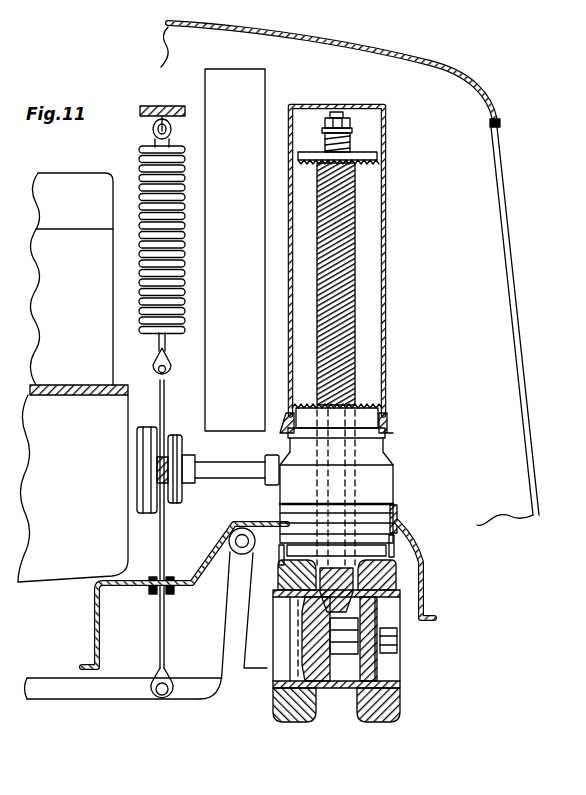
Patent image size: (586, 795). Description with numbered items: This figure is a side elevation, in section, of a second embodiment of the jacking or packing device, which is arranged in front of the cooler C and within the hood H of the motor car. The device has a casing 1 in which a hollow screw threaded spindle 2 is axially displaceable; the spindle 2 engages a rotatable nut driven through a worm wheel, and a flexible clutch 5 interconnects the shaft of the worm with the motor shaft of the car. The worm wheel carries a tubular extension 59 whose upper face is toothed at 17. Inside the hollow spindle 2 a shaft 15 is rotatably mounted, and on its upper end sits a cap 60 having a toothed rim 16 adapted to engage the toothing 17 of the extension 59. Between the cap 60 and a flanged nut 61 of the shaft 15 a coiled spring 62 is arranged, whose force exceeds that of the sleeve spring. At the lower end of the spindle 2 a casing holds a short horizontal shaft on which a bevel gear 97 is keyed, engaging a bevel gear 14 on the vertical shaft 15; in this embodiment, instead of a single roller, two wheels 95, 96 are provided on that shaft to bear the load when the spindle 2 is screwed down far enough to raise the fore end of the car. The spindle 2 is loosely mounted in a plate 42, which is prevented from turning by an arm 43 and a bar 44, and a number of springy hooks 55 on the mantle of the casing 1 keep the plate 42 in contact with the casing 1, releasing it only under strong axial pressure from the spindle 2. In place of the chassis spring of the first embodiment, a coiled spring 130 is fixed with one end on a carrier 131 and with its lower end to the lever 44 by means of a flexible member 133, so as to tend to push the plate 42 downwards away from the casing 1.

The hood H is at (479, 80).
The cooler C is at (214, 78).
The carrier 131 is at (164, 100).
The coiled spring 130 is at (140, 153).
The flexible member 133 is at (160, 622).
The flexible clutch 5 is at (196, 449).
The arm 43 is at (230, 553).
The bar 44 is at (75, 692).
The hollow screw threaded spindle 2 is at (357, 254).
The flanged nut 61 is at (326, 135).
The coiled spring 62 is at (352, 145).
The cap 60 is at (360, 150).
The toothed rim 16 is at (376, 160).
The toothing 17 is at (366, 406).
The tubular extension 59 is at (390, 422).
The casing 1 is at (379, 488).
The plate 42 is at (388, 535).
The springy hooks 55 is at (399, 548).
The shaft 15 is at (394, 577).
The bevel gear 14 is at (373, 617).
The wheel 95 is at (290, 718).
The wheel 96 is at (394, 707).
The bevel gear 97 is at (336, 684).